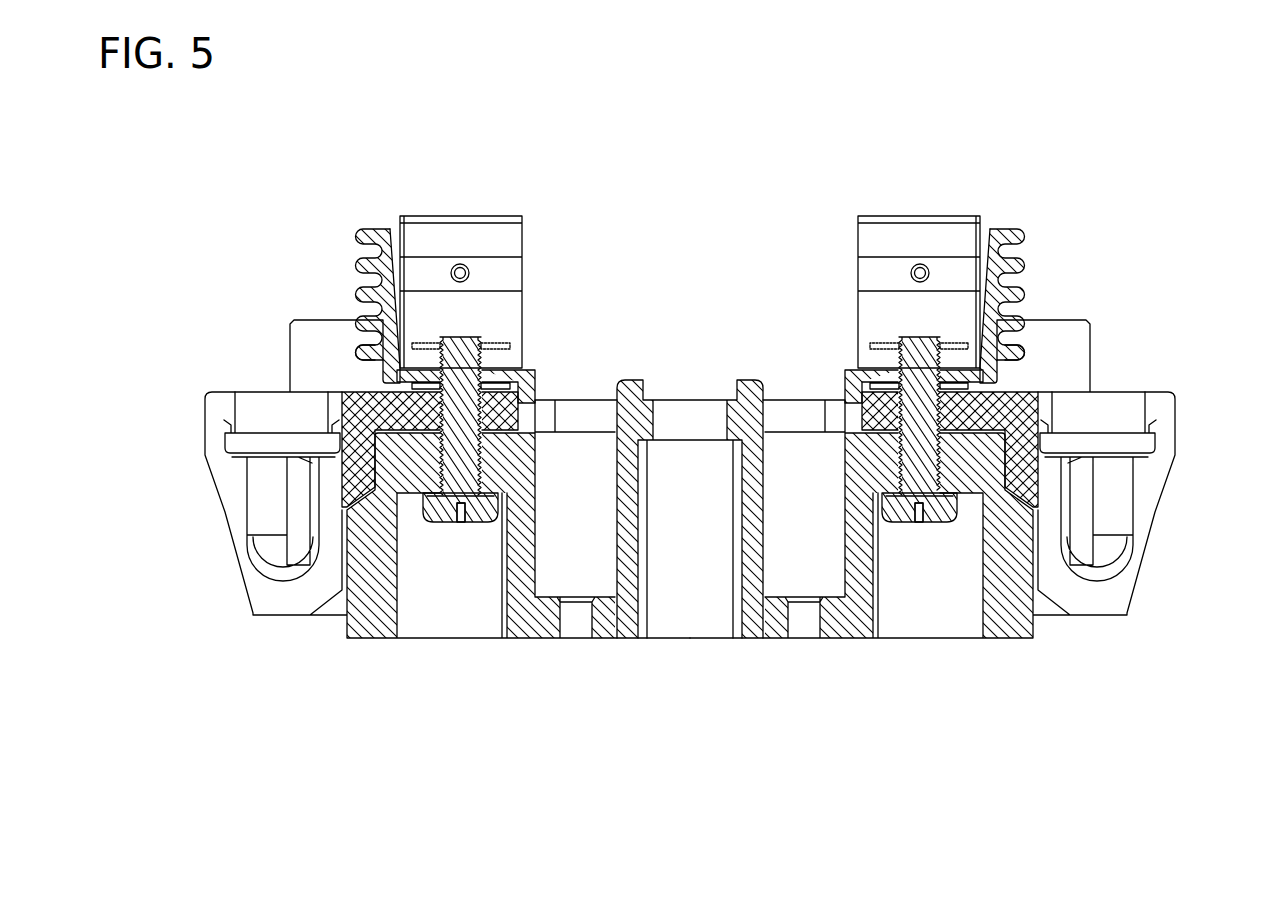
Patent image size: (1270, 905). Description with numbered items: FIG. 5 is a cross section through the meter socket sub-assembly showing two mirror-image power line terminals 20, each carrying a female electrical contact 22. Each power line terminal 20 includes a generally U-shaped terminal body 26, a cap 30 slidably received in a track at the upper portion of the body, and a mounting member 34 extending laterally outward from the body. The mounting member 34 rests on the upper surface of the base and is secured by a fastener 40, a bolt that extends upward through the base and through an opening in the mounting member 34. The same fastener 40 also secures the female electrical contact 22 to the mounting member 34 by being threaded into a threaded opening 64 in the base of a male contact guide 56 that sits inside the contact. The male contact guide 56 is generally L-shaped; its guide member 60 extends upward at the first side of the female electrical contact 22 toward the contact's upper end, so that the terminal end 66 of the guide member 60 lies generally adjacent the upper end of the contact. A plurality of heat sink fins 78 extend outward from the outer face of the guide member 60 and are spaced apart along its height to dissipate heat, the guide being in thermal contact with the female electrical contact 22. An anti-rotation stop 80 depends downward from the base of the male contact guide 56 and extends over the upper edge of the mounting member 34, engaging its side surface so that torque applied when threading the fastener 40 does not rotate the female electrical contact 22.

The power line terminal 20 is at (225, 507).
The female electrical contact 22 is at (477, 210).
The terminal body 26 is at (632, 587).
The cap 30 is at (257, 407).
The mounting member 34 is at (535, 372).
The fastener 40 is at (447, 522).
The male contact guide 56 is at (689, 269).
The guide member 60 is at (396, 266).
The threaded opening 64 is at (477, 350).
The terminal end 66 is at (364, 232).
The heat sink fins 78 is at (366, 352).
The anti-rotation stop 80 is at (518, 425).